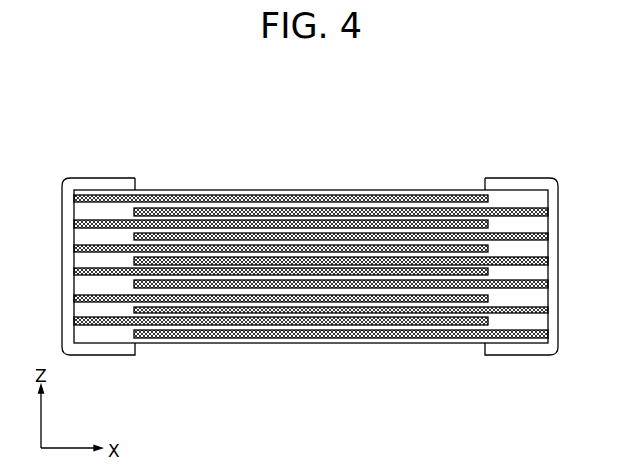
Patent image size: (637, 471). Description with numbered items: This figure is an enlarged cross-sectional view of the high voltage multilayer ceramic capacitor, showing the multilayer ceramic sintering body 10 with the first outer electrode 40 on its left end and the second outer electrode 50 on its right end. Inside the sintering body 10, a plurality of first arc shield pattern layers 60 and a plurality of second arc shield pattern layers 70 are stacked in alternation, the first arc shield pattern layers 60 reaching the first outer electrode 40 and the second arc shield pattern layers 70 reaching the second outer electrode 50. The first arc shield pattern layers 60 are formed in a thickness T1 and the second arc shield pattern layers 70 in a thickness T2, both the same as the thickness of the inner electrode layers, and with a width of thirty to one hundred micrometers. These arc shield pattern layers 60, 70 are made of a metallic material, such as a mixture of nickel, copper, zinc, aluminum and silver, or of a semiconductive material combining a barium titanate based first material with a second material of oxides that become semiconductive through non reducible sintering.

The multilayer ceramic sintering body 10 is at (88, 287).
The first outer electrode 40 is at (100, 182).
The second outer electrode 50 is at (505, 183).
The first arc shield pattern layer 60 is at (75, 197).
The second arc shield pattern layer 70 is at (548, 214).
The thickness of first arc shield pattern layer T1 is at (115, 262).
The thickness of second arc shield pattern layer T2 is at (497, 250).